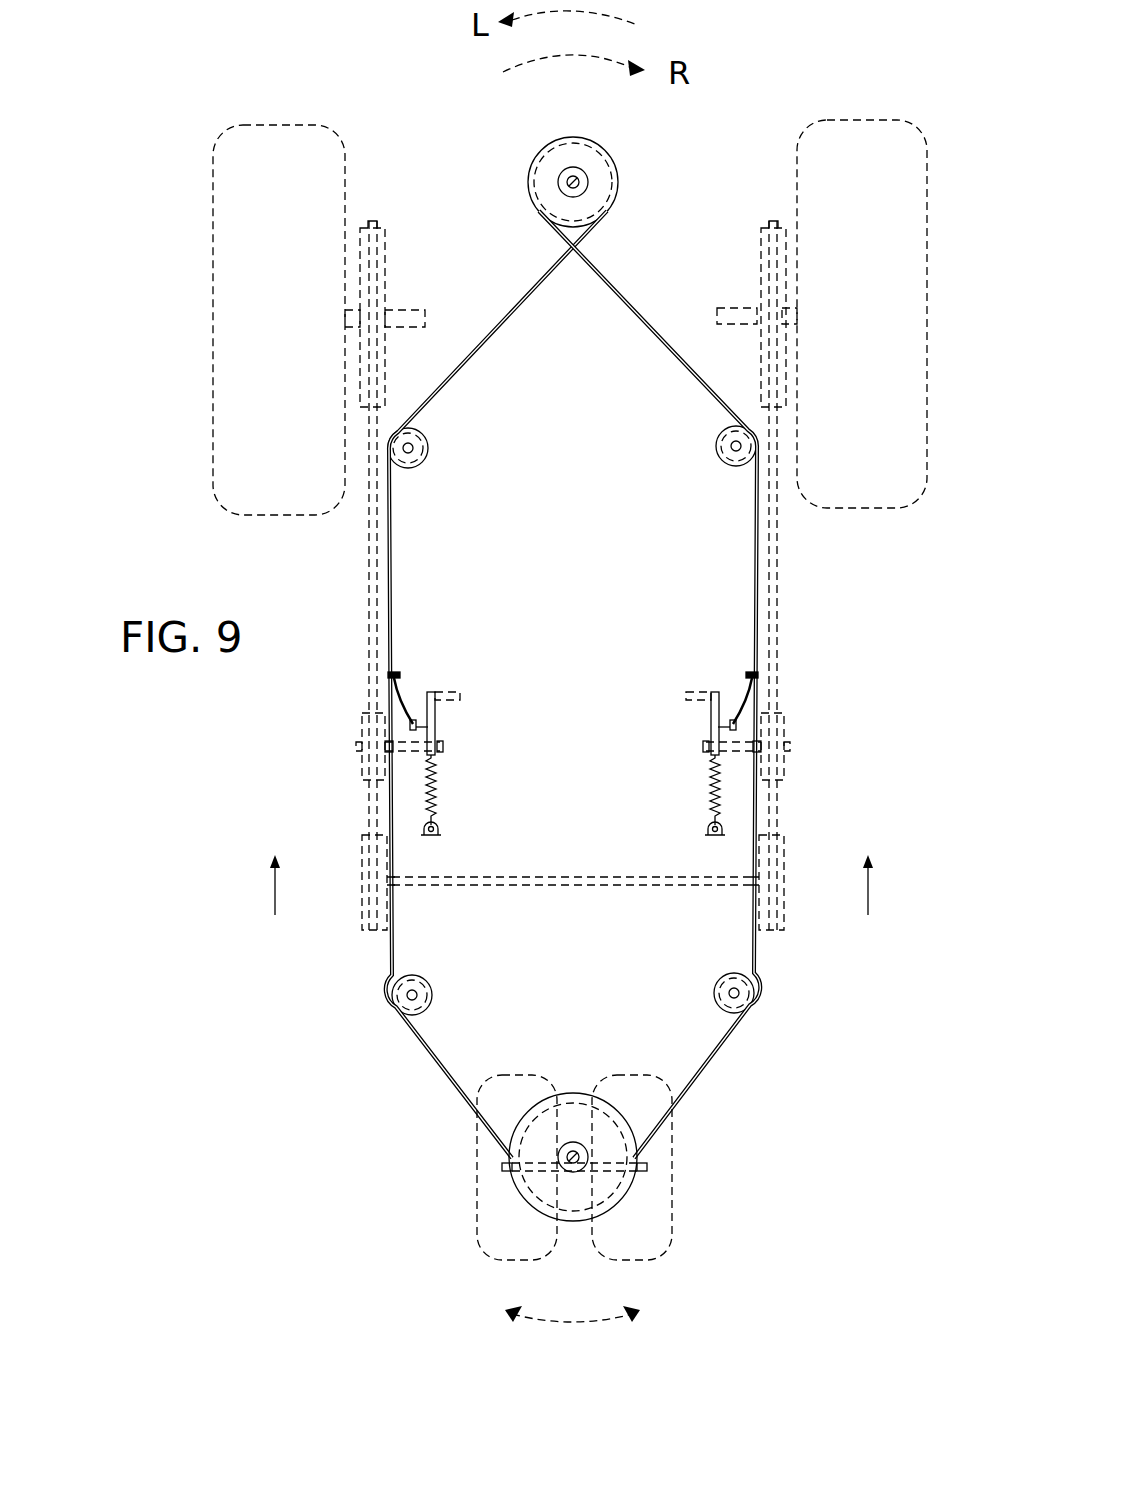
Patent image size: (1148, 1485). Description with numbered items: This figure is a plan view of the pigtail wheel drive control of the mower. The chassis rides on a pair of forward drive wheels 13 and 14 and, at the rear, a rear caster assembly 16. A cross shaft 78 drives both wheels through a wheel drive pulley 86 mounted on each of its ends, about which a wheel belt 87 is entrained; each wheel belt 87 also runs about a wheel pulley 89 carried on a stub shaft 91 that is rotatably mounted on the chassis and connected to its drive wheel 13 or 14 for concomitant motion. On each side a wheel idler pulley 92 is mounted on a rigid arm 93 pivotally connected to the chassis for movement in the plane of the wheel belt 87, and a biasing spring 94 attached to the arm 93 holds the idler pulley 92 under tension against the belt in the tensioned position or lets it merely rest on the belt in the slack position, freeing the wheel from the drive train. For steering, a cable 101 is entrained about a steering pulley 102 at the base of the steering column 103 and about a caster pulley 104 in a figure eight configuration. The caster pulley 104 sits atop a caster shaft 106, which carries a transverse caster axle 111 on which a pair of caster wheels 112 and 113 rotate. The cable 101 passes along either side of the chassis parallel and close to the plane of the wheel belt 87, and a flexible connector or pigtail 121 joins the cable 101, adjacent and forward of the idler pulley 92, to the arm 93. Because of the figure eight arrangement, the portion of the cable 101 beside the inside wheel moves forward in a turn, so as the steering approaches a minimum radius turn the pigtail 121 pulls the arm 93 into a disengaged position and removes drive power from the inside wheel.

The forward drive wheel 13 is at (862, 138).
The forward drive wheel 14 is at (298, 148).
The rear caster assembly 16 is at (545, 1130).
The cross shaft 78 is at (590, 888).
The wheel drive pulley 86 is at (363, 912).
The wheel belt 87 is at (372, 589).
The wheel pulley 89 is at (385, 262).
The stub shaft 91 is at (410, 313).
The wheel idler pulley 92 is at (360, 725).
The rigid arm 93 is at (437, 723).
The biasing spring 94 is at (438, 790).
The cable 101 is at (547, 268).
The steering pulley 102 is at (573, 180).
The steering column 103 is at (580, 183).
The caster pulley 104 is at (537, 1125).
The caster shaft 106 is at (578, 1158).
The caster axle 111 is at (648, 1167).
The caster wheel 112 is at (640, 1248).
The caster wheel 113 is at (490, 1250).
The pigtail 121 is at (405, 688).